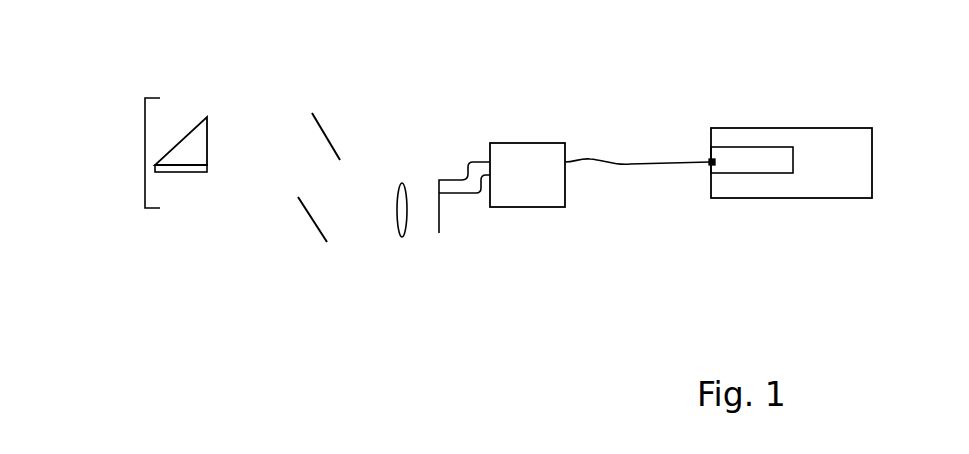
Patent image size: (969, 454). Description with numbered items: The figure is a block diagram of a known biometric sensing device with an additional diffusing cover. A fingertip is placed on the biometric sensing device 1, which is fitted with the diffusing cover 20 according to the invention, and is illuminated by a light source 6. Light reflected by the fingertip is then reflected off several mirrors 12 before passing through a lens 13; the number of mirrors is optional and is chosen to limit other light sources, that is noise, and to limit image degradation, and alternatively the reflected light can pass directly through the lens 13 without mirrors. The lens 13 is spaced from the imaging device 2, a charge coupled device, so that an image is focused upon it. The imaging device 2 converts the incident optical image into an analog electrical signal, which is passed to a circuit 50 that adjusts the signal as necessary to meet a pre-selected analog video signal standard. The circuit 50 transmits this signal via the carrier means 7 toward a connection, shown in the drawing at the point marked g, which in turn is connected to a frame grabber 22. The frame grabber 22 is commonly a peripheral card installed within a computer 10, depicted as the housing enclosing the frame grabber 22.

The biometric sensing device 1 is at (184, 141).
The imaging device 2 is at (439, 227).
The light source 6 is at (197, 173).
The carrier means 7 is at (631, 162).
The computer 10 is at (837, 128).
The mirrors 12 is at (319, 121).
The lens 13 is at (399, 237).
The diffusing cover 20 is at (145, 150).
The frame grabber 22 is at (752, 147).
The circuit 50 is at (534, 143).
The connection point g is at (707, 167).